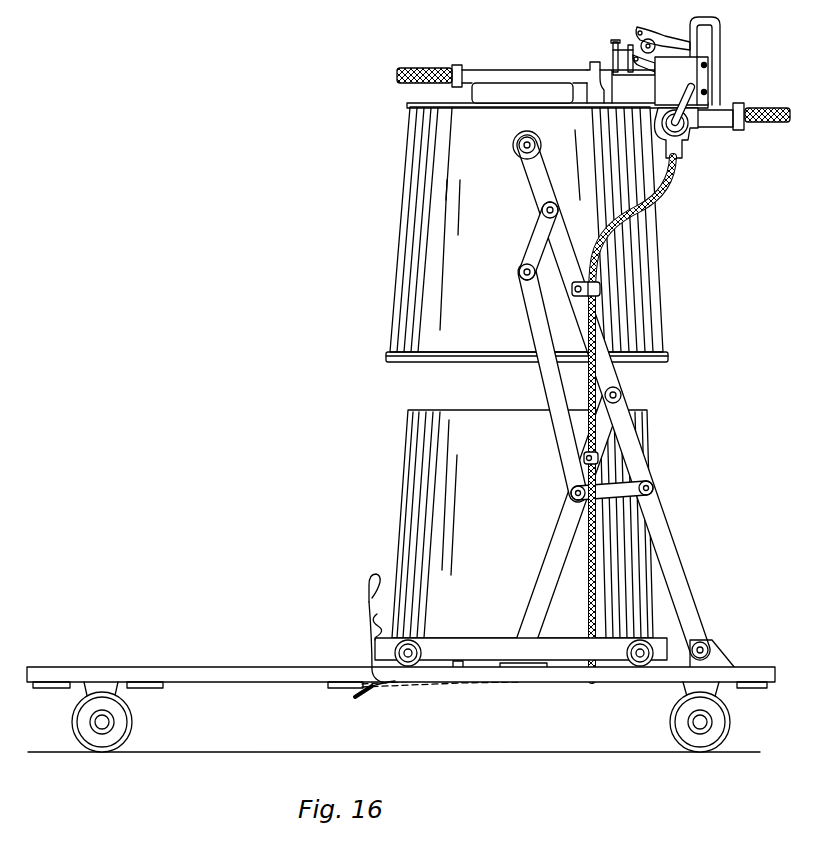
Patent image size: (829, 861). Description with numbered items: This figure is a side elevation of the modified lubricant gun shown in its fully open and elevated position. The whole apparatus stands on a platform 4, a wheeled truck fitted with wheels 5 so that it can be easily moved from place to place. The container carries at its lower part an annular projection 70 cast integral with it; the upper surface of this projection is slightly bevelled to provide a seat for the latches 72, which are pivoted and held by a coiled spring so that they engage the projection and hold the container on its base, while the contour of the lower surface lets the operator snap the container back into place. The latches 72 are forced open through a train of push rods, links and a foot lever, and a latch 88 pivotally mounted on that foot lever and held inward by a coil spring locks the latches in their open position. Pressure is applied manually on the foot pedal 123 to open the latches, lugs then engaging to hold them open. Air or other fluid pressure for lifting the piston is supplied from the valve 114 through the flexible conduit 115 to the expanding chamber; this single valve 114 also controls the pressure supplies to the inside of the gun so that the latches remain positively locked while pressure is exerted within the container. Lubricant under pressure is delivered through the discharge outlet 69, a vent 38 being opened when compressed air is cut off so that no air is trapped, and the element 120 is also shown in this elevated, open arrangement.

The platform 4 is at (268, 666).
The wheels 5 is at (117, 716).
The vent 38 is at (719, 50).
The discharge outlet 69 is at (447, 67).
The annular projection 70 is at (388, 355).
The latches 72 is at (375, 631).
The latch 88 is at (370, 598).
The valve 114 is at (690, 134).
The flexible conduit 115 is at (668, 185).
The handle 120 is at (756, 110).
The foot pedal 123 is at (368, 697).